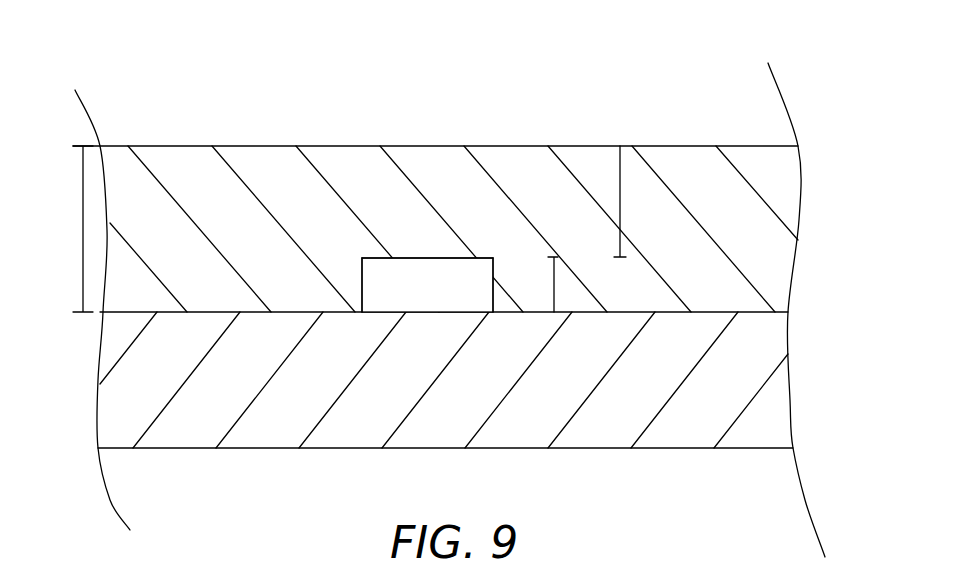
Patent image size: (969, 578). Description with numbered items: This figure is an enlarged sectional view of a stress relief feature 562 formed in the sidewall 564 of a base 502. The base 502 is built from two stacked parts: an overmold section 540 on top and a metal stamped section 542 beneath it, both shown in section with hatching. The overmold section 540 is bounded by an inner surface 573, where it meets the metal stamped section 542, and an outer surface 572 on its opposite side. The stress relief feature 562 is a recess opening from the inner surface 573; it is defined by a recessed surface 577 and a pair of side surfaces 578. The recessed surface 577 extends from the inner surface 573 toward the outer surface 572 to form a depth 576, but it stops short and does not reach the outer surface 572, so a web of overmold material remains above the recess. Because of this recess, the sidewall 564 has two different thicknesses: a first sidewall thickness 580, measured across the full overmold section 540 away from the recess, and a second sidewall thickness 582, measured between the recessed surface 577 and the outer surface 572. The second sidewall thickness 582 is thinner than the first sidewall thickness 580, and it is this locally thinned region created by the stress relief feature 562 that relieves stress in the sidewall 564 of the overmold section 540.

The base 502 is at (663, 90).
The overmold section 540 is at (480, 194).
The metal stamped section 542 is at (694, 406).
The stress relief feature 562 is at (434, 260).
The sidewall 564 is at (767, 182).
The outer surface 572 is at (262, 146).
The inner surface 573 is at (268, 313).
The depth 576 is at (555, 278).
The recessed surface 577 is at (395, 258).
The side surfaces 578 is at (362, 268).
The first sidewall thickness 580 is at (83, 205).
The second sidewall thickness 582 is at (620, 175).